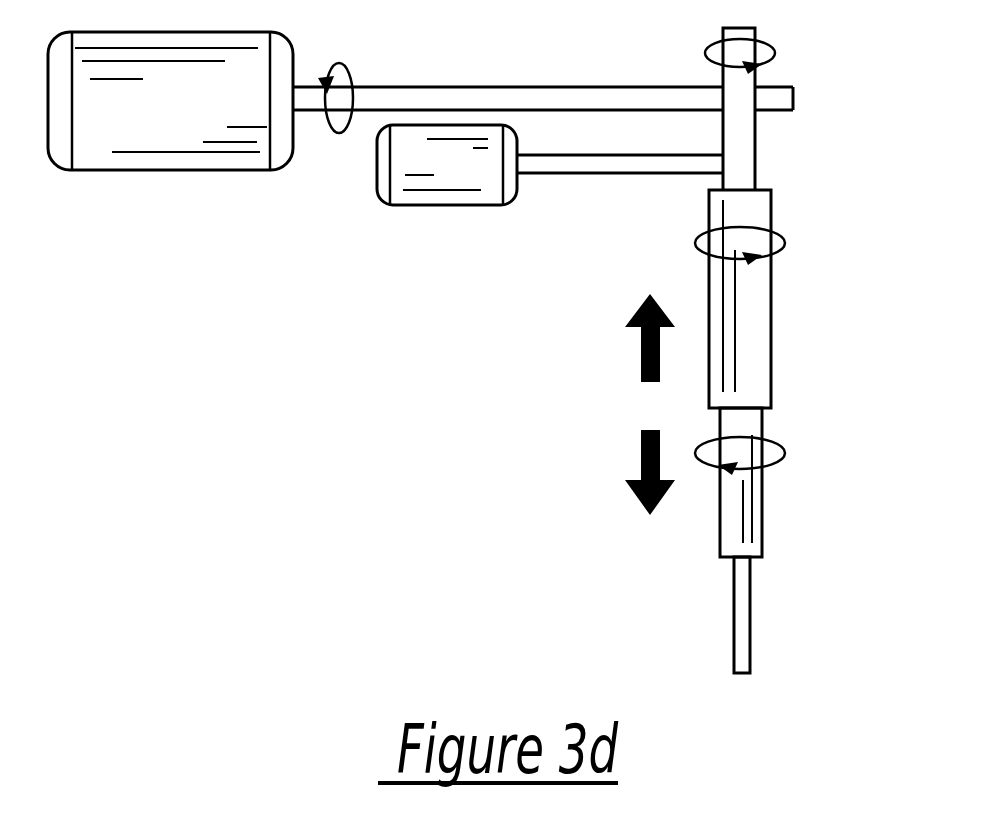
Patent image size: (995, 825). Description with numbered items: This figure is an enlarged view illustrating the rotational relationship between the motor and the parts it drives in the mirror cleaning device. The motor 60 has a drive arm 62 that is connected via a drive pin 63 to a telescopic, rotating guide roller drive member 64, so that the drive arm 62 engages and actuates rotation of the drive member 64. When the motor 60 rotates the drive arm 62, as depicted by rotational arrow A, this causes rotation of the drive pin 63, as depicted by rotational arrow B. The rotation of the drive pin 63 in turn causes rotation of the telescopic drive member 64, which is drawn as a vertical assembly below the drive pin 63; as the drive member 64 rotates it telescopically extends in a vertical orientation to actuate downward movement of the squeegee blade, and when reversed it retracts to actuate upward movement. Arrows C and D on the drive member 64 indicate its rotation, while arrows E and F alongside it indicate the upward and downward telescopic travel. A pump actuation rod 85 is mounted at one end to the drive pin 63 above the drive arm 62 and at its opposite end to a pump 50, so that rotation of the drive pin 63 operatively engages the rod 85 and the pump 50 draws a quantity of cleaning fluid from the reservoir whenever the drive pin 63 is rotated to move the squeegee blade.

The motor 60 is at (168, 170).
The drive arm 62 is at (622, 83).
The drive pin 63 is at (757, 134).
The pump 50 is at (450, 205).
The pump actuation rod 85 is at (622, 173).
The telescopic rotating guide roller drive member 64 is at (815, 431).
The rotational arrow A is at (346, 76).
The rotational arrow B is at (757, 52).
The rotation direction C is at (755, 242).
The rotation direction D is at (756, 456).
The upward movement E is at (635, 338).
The downward movement F is at (635, 470).